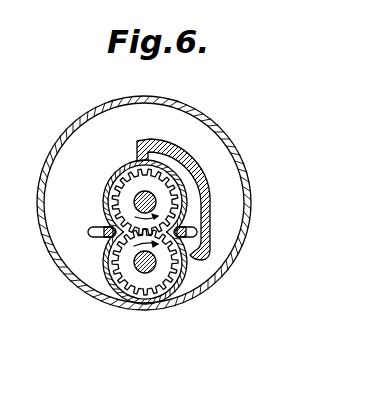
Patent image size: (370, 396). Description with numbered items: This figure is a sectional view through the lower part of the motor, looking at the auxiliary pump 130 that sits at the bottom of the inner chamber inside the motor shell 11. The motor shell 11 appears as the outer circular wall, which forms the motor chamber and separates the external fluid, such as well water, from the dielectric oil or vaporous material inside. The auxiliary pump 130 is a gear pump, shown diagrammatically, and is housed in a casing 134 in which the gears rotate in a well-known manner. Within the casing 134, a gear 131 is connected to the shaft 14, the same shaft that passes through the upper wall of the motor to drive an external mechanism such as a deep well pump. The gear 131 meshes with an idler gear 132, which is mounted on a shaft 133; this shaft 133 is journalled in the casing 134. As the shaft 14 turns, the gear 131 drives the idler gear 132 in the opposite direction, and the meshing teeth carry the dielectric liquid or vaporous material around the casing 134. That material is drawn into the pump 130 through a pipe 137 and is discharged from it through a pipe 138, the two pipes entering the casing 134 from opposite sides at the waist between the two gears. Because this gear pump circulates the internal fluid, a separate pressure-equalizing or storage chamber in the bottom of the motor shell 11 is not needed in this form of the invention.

The motor shell 11 is at (206, 113).
The shaft 14 is at (143, 197).
The auxiliary pump 130 is at (212, 251).
The gear 131 is at (125, 200).
The idler gear 132 is at (138, 279).
The shaft 133 is at (136, 264).
The casing 134 is at (178, 286).
The pipe 137 is at (189, 230).
The pipe 138 is at (96, 237).